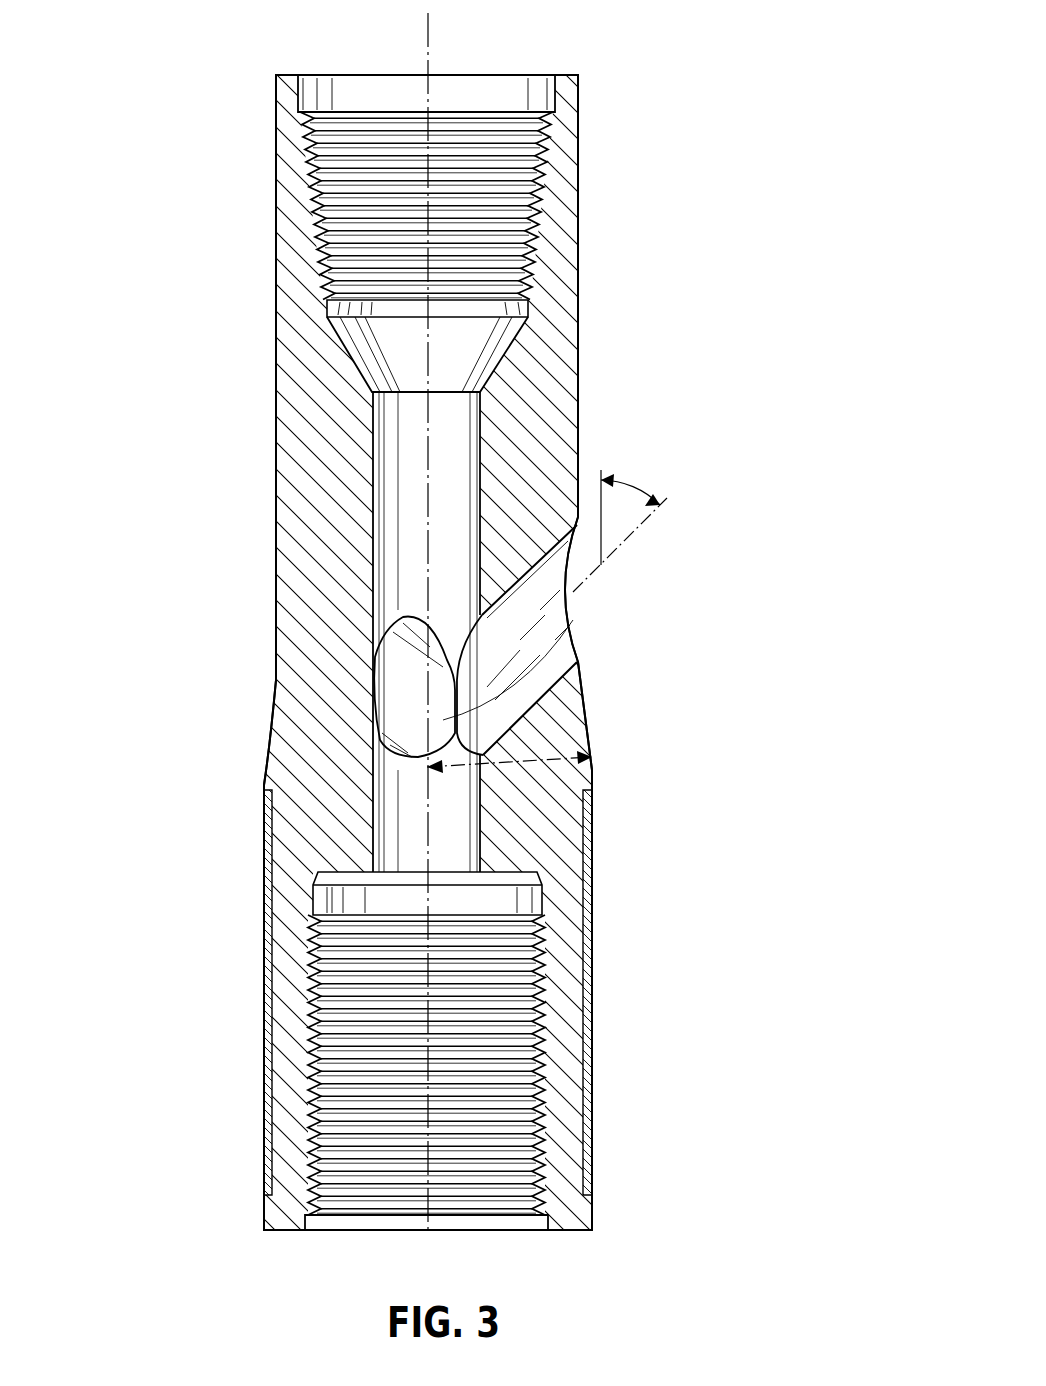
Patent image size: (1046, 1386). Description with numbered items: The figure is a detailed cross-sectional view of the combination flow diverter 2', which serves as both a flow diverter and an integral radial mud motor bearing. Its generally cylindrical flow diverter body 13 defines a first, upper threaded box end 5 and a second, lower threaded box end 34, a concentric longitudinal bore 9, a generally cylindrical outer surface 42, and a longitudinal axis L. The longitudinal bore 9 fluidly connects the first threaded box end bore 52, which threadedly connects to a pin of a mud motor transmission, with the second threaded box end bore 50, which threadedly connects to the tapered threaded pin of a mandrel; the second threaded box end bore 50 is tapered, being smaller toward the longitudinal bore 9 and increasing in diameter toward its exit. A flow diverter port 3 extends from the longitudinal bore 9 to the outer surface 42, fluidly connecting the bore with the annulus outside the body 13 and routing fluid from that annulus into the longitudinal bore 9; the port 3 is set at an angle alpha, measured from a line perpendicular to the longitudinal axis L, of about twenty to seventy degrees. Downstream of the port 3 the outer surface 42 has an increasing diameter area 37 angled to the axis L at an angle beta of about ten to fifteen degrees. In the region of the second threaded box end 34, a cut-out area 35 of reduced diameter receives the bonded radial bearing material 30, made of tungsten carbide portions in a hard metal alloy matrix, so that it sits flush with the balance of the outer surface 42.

The combination flow diverter 2' is at (528, 652).
The flow diverter port 3 is at (560, 652).
The first threaded box end 5 is at (560, 175).
The longitudinal bore 9 is at (390, 537).
The flow diverter body 13 is at (322, 390).
The bearing material 30 is at (263, 990).
The second threaded box end 34 is at (562, 1057).
The cut-out area 35 is at (263, 900).
The increasing diameter area 37 is at (268, 706).
The outer surface 42 is at (580, 320).
The second threaded box end bore 50 is at (332, 1104).
The first threaded box end bore 52 is at (330, 218).
The longitudinal axis L is at (428, 33).